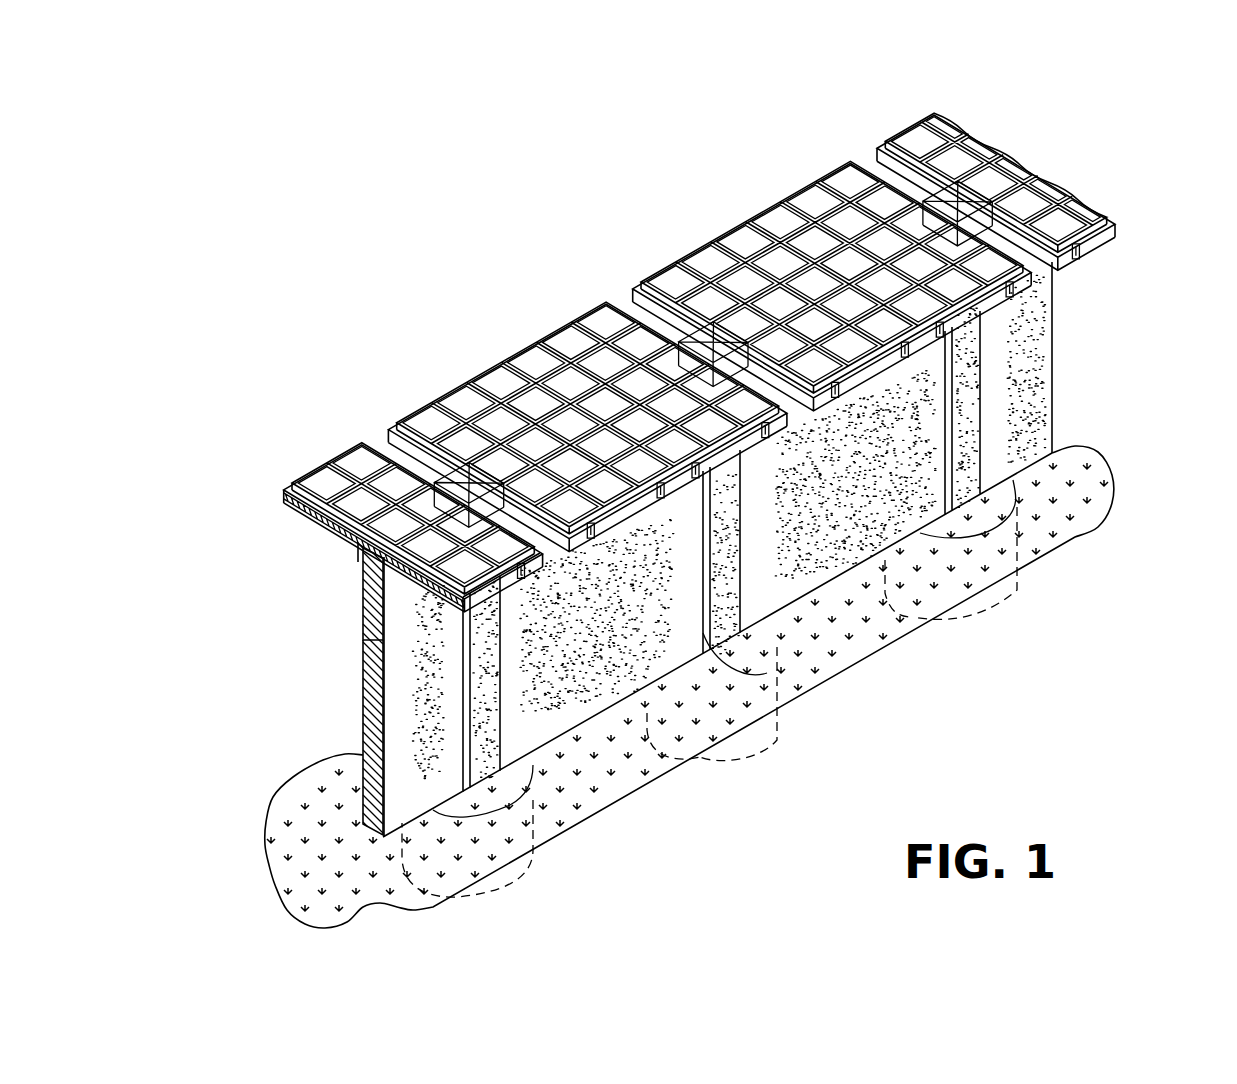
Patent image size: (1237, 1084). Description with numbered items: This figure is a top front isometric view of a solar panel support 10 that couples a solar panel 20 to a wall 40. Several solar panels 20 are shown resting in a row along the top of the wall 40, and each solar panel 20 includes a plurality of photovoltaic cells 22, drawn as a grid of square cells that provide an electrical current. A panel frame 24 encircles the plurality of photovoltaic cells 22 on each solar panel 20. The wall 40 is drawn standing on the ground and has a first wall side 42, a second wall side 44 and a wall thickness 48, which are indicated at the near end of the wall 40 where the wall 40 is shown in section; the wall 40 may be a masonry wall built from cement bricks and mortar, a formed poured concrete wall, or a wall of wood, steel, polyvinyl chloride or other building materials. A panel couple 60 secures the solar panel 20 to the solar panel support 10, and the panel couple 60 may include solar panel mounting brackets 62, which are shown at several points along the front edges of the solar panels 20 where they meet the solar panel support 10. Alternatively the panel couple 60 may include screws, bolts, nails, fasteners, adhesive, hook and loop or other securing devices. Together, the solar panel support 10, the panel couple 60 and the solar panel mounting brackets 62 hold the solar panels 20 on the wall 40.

The solar panel support 10 is at (287, 498).
The solar panel 20 is at (322, 478).
The photovoltaic cells 22 is at (430, 413).
The panel frame 24 is at (343, 458).
The wall 40 is at (372, 642).
The first wall side 42 is at (398, 706).
The second wall side 44 is at (363, 598).
The wall thickness 48 is at (372, 678).
The panel couple 60 is at (322, 518).
The solar panel mounting brackets 62 is at (518, 568).